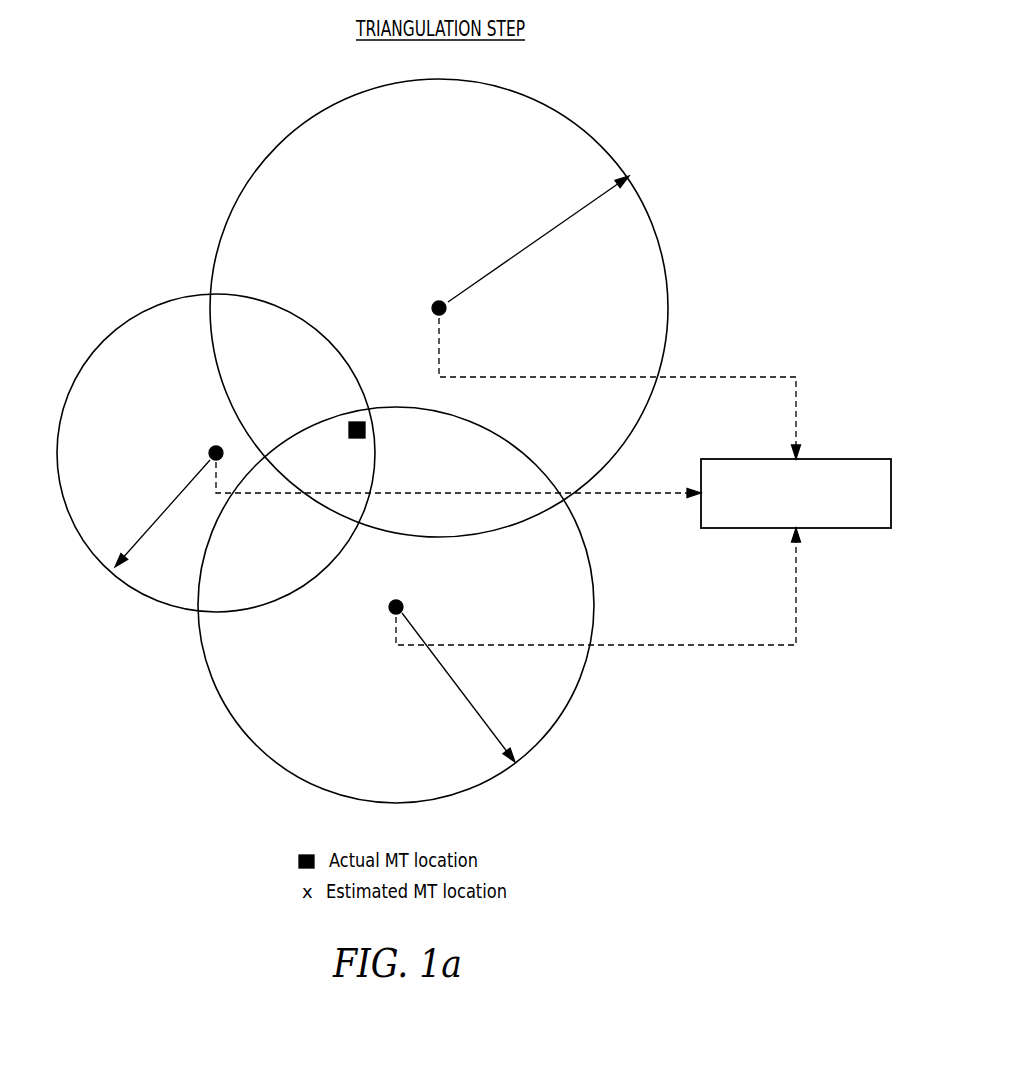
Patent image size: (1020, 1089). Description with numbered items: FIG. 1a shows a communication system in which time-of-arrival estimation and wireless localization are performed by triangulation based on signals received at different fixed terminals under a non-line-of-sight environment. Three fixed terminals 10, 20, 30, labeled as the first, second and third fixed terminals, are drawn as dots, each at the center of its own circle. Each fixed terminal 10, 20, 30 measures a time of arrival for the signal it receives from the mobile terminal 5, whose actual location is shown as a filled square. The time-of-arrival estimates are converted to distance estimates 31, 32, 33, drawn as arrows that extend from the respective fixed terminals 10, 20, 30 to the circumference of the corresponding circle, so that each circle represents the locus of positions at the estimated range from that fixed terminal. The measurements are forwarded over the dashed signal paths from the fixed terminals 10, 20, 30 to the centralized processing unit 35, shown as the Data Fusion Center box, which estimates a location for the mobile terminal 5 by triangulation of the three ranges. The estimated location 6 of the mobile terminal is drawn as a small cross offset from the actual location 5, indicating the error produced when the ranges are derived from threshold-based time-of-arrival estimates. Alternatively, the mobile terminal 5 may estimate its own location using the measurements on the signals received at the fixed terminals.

The mobile terminal 5 is at (357, 440).
The estimated mobile terminal location 6 is at (326, 463).
The fixed terminal 10 is at (201, 418).
The fixed terminal 20 is at (415, 586).
The fixed terminal 30 is at (427, 273).
The distance estimate 31 is at (151, 482).
The distance estimate 32 is at (429, 693).
The distance estimate 33 is at (509, 214).
The centralized processing unit 35 is at (875, 529).